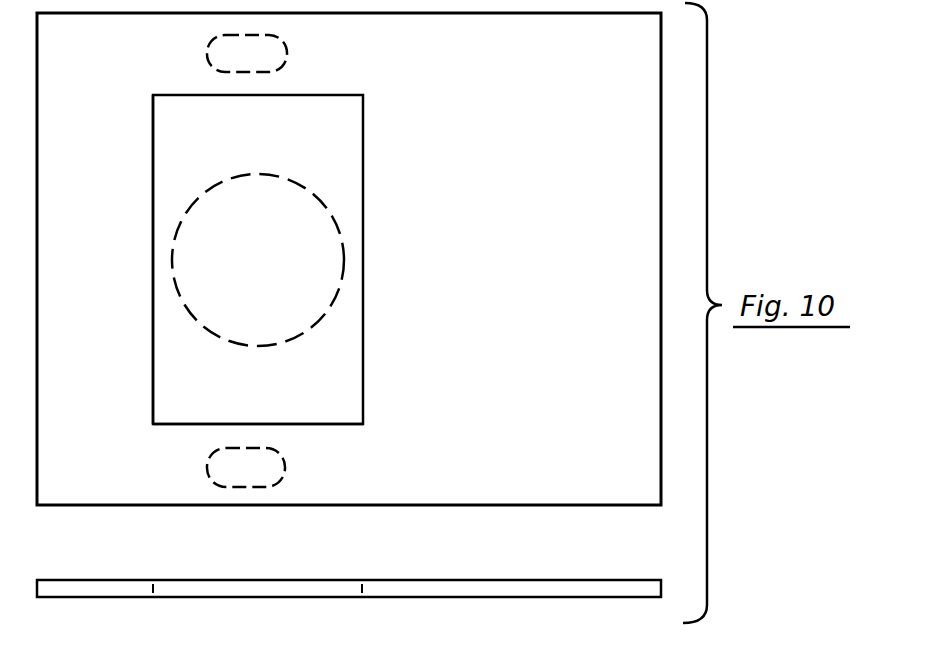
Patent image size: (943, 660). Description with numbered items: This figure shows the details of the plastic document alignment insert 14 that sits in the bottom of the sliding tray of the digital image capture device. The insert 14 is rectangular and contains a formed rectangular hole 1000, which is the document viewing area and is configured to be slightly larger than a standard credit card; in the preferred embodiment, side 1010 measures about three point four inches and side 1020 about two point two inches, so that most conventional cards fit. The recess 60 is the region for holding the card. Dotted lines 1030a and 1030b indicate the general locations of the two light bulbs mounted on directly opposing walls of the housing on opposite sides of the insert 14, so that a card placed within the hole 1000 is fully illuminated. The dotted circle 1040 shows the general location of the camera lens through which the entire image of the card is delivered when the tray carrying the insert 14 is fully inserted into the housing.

The plastic document alignment insert 14 is at (480, 508).
The recess 60 is at (205, 143).
The formed rectangular hole 1000 is at (366, 259).
The side 1010 is at (155, 342).
The side 1020 is at (272, 424).
The dotted lines showing bulb location 1030a is at (287, 57).
The dotted lines showing bulb location 1030b is at (285, 462).
The dotted lines showing lens location 1040 is at (238, 173).